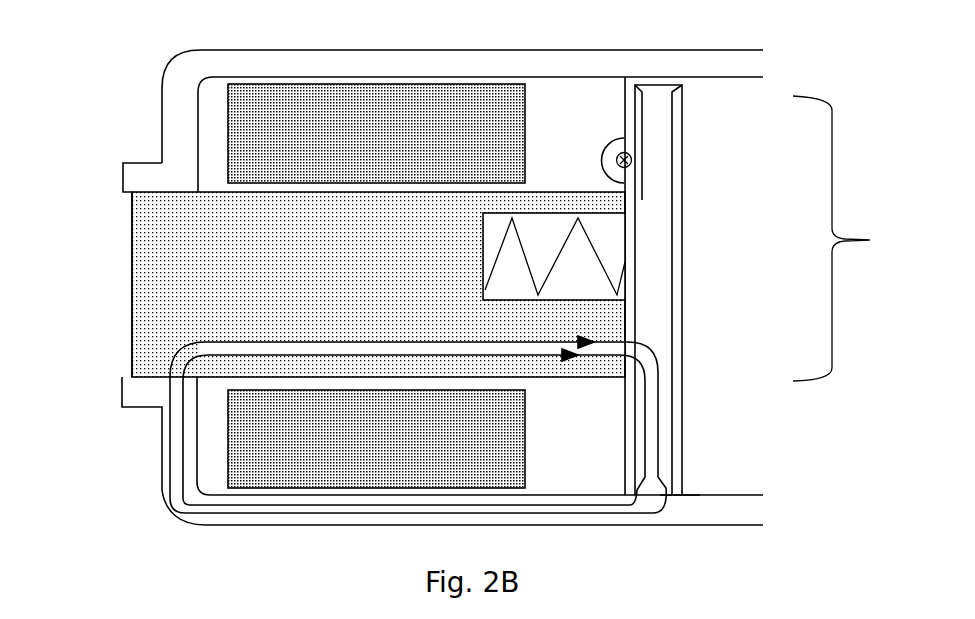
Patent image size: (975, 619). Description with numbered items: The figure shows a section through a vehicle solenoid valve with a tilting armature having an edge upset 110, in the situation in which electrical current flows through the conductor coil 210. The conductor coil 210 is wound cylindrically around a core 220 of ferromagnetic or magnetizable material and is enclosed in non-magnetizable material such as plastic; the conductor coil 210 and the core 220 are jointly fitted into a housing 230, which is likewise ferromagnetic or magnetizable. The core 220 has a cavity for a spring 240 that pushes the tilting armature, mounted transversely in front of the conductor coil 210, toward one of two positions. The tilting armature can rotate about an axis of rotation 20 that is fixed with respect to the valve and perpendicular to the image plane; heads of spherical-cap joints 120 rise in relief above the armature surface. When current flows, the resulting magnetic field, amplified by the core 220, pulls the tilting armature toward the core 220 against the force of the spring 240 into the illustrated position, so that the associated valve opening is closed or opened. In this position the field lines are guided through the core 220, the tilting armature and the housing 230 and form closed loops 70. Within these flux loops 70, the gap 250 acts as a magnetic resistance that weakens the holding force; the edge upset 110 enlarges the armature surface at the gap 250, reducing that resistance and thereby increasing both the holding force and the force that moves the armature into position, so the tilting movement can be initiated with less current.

The axis of rotation 20 is at (622, 138).
The closed loops 70 is at (183, 414).
The edge upset 110 is at (683, 90).
The spherical-cap joints 120 is at (634, 160).
The conductor coil 210 is at (404, 151).
The core 220 is at (341, 304).
The housing 230 is at (160, 174).
The spring 240 is at (572, 232).
The gap 250 is at (686, 495).